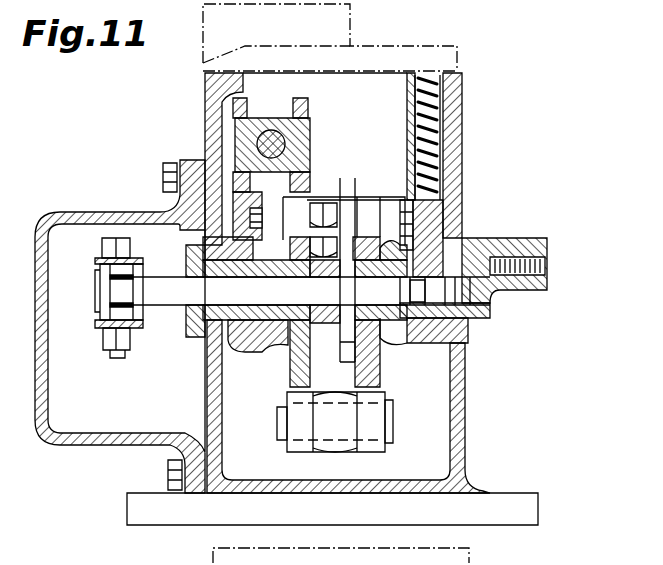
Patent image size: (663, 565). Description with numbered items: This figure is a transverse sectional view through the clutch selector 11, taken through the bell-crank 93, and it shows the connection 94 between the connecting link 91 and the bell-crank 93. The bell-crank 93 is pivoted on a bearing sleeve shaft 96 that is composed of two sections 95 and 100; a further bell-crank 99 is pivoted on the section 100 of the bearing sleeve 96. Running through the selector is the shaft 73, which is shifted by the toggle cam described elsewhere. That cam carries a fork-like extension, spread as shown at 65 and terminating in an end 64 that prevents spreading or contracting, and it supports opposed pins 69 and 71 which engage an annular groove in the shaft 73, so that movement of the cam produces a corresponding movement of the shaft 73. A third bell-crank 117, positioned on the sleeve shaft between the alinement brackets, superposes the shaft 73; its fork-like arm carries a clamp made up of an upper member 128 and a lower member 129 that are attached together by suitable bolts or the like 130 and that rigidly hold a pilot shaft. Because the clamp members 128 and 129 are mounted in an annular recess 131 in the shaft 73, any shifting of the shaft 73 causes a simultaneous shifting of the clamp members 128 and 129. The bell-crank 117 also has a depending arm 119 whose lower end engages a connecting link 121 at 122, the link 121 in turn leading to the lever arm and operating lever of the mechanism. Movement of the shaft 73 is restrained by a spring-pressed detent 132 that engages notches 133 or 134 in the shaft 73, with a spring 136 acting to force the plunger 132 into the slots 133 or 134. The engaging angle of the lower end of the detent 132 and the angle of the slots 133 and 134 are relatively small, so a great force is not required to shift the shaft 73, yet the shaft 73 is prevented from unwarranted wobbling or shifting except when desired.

The clutch selector 11 is at (463, 106).
The spring 136 is at (438, 139).
The spring-pressed detent 132 is at (463, 206).
The connecting link 91 is at (277, 140).
The connection 94 is at (303, 143).
The bolts 130 is at (336, 230).
The bell-crank 93 is at (252, 218).
The fork-like extension 65 is at (98, 258).
The pin 69 is at (112, 270).
The shaft 73 is at (168, 286).
The pin 71 is at (118, 316).
The section 95 is at (192, 321).
The end 64 is at (108, 361).
The upper member 128 is at (312, 288).
The annular recess 131 is at (336, 292).
The notch 134 is at (408, 292).
The bearing sleeve shaft 96 is at (493, 306).
The section 100 is at (490, 313).
The lower member 129 is at (322, 324).
The bell-crank 99 is at (396, 338).
The notch 133 is at (464, 331).
The depending arm 119 is at (293, 372).
The bell-crank 117 is at (385, 369).
The connection 122 is at (280, 426).
The connecting link 121 is at (338, 451).